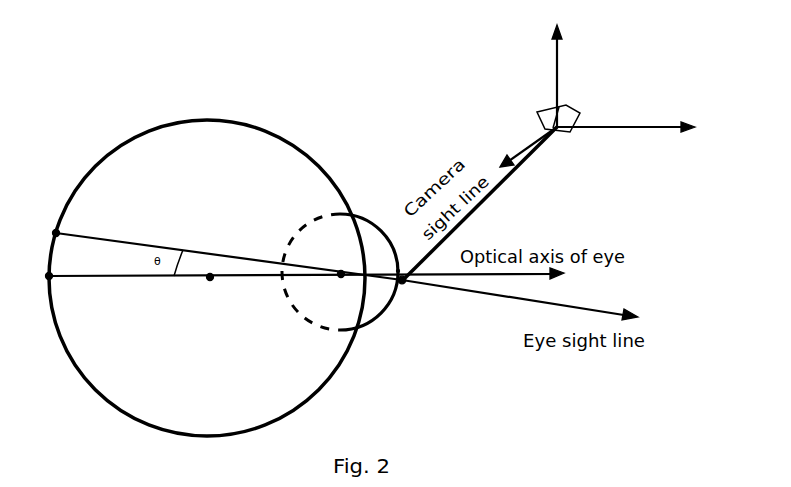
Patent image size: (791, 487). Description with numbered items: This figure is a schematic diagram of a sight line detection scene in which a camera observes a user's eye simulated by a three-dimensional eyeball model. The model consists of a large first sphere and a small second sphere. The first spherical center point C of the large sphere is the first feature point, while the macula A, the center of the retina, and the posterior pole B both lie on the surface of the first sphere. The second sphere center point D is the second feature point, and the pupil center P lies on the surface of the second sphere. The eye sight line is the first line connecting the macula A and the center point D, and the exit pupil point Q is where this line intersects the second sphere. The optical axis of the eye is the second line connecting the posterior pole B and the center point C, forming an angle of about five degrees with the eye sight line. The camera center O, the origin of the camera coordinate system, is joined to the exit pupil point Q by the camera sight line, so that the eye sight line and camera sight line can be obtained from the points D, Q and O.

The macula of the eyeball A is at (332, 273).
The posterior pole of the eyeball B is at (293, 279).
The first spherical center point C is at (209, 287).
The second sphere center point D is at (343, 261).
The pupil center P is at (404, 258).
The exit pupil point Q is at (405, 294).
The camera center O is at (592, 94).